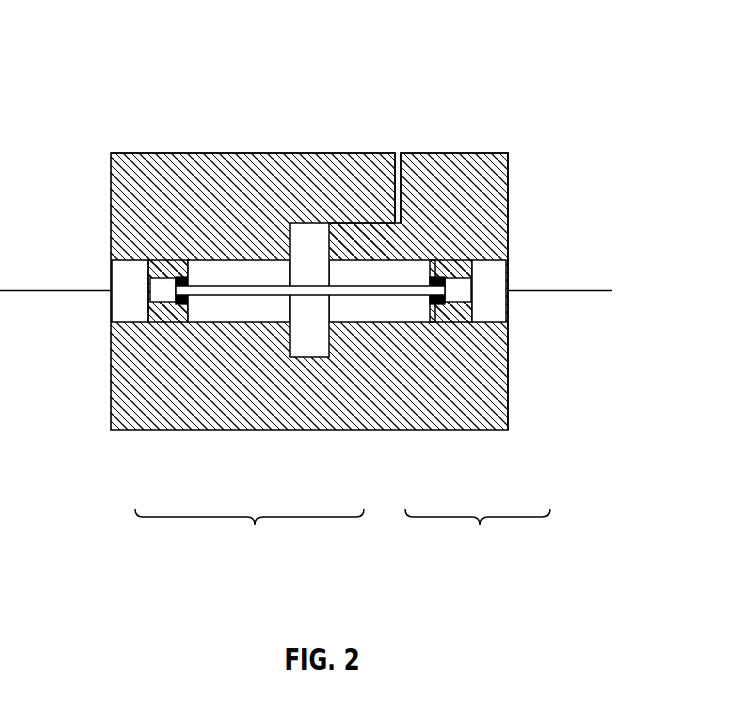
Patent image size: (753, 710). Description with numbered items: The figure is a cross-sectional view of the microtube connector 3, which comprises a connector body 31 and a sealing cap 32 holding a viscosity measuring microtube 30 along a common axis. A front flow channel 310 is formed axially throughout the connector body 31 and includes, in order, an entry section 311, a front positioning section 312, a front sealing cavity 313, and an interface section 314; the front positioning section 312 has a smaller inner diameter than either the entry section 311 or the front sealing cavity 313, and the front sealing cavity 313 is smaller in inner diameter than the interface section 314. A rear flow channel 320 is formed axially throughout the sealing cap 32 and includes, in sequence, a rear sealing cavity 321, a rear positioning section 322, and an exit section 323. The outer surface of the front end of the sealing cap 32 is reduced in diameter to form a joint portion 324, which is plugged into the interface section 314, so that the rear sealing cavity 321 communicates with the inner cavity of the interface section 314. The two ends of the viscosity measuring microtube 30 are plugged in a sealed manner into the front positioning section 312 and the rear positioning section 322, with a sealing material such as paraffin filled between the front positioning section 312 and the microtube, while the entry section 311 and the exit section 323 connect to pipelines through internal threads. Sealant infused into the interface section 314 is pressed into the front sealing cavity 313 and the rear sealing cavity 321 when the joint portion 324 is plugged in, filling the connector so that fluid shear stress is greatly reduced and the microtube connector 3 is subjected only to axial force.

The microtube connector 3 is at (96, 49).
The viscosity measuring microtube 30 is at (220, 283).
The connector body 31 is at (297, 185).
The sealing cap 32 is at (455, 195).
The front flow channel 310 is at (249, 537).
The entry section 311 is at (128, 302).
The front positioning section 312 is at (171, 298).
The front sealing cavity 313 is at (240, 312).
The interface section 314 is at (313, 343).
The rear flow channel 320 is at (477, 534).
The rear sealing cavity 321 is at (385, 312).
The rear positioning section 322 is at (452, 296).
The exit section 323 is at (488, 314).
The joint portion 324 is at (350, 243).